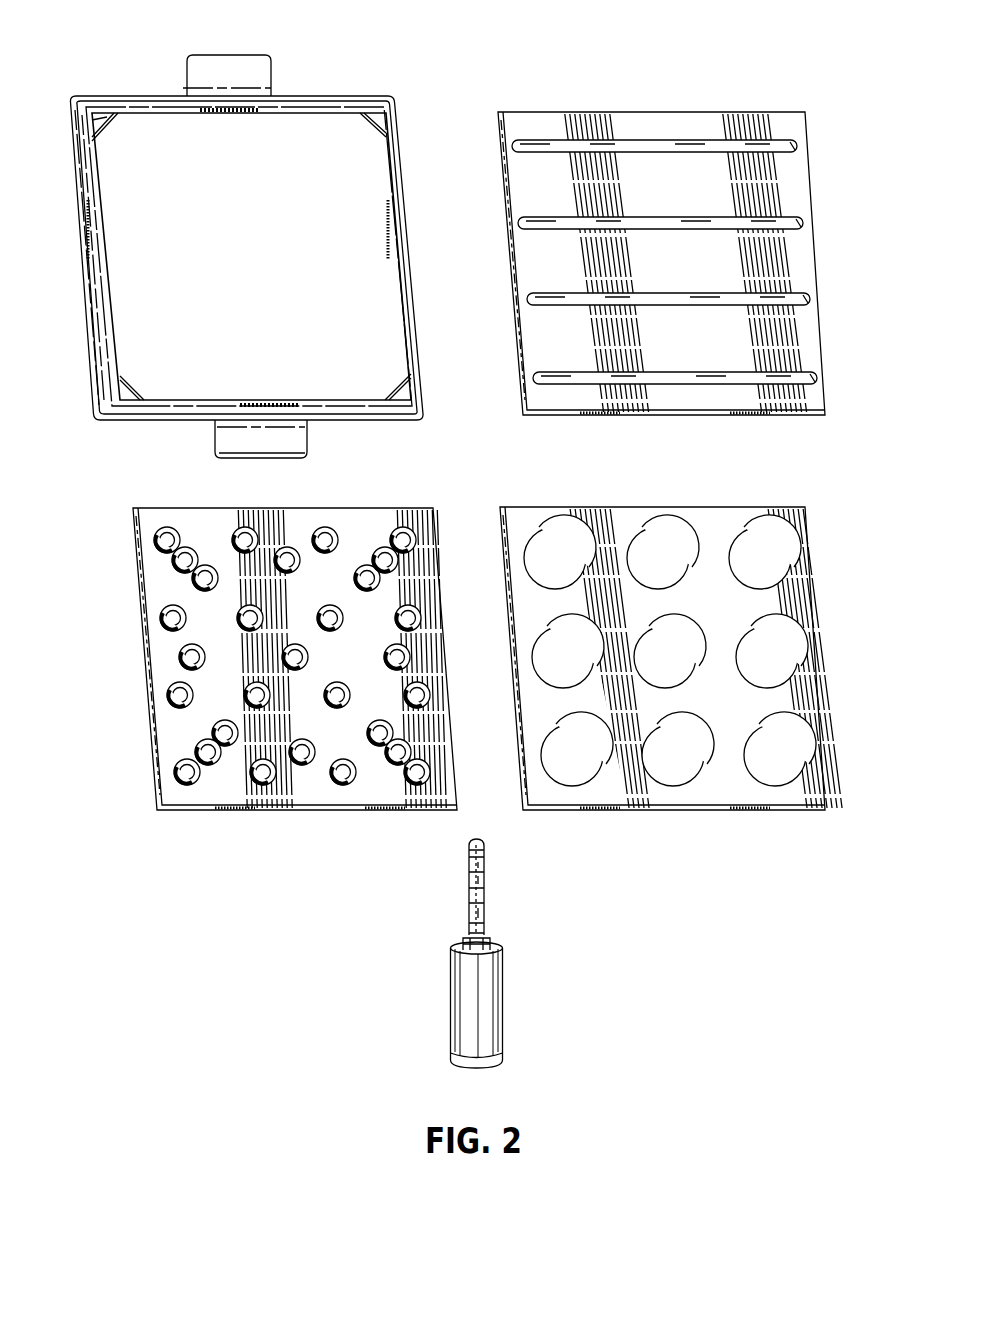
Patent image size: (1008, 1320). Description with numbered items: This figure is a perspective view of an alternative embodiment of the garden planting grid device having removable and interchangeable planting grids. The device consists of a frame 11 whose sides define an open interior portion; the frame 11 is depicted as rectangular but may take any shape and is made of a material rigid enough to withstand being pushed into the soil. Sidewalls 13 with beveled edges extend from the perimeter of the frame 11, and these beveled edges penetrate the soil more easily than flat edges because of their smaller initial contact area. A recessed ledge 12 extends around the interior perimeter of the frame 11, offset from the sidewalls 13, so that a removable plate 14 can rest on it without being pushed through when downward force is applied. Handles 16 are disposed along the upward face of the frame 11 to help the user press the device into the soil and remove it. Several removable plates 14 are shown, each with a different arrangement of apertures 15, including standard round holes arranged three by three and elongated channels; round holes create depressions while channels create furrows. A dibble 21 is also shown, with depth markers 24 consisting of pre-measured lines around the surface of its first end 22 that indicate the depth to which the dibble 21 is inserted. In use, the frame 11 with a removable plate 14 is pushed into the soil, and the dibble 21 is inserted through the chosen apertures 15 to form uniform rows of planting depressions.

The frame 11 is at (257, 230).
The recessed ledge 12 is at (106, 118).
The sidewalls 13 is at (398, 237).
The removable plates 14 is at (465, 472).
The apertures 15 is at (796, 302).
The handles 16 is at (306, 434).
The dibble 21 is at (525, 953).
The first end 22 is at (474, 887).
The depth markers 24 is at (468, 877).